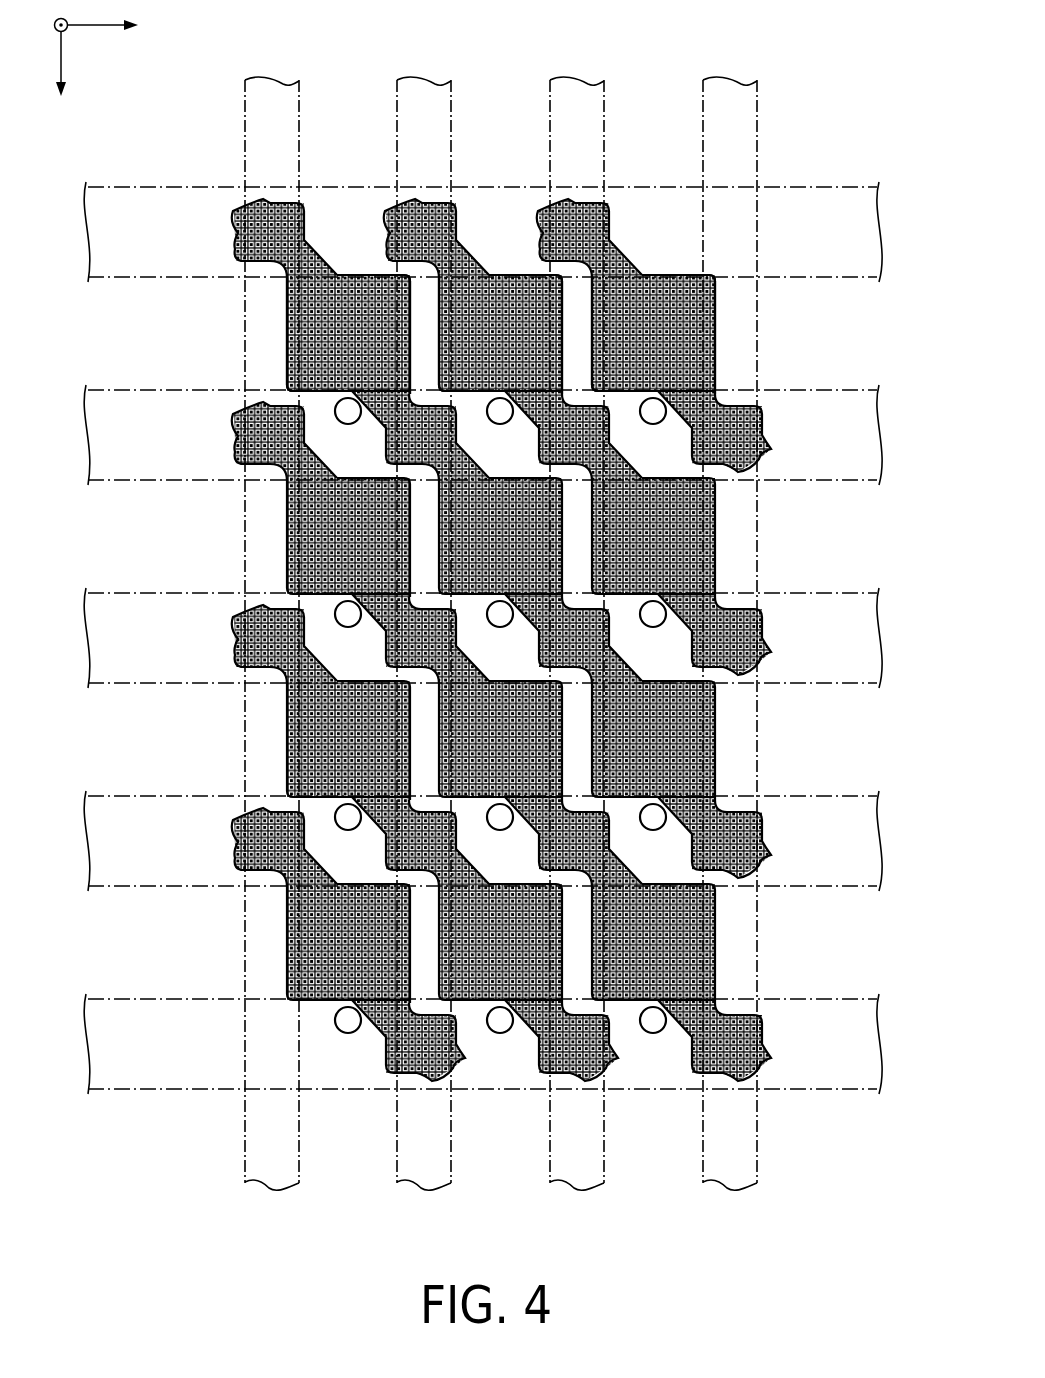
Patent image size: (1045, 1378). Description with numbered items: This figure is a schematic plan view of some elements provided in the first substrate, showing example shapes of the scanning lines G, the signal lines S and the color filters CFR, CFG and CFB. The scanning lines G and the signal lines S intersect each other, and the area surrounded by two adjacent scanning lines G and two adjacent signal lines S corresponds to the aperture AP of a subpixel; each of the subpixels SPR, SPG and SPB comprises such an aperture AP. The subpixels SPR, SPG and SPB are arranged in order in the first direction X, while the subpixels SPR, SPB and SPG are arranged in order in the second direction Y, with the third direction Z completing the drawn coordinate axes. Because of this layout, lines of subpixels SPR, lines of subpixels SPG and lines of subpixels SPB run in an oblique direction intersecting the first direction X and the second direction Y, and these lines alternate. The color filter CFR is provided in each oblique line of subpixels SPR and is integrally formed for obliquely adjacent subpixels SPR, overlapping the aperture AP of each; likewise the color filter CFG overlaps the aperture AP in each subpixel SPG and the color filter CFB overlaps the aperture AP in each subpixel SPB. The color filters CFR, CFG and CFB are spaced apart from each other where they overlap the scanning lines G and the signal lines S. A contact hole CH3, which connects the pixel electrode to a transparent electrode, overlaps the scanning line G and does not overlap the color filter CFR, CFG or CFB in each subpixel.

The aperture AP is at (501, 263).
The color filter CFR is at (354, 882).
The color filter CFG is at (506, 882).
The color filter CFB is at (658, 882).
The subpixel SPR is at (373, 947).
The subpixel SPG is at (525, 947).
The subpixel SPB is at (678, 947).
The contact hole CH3 is at (653, 1007).
The scanning line G is at (507, 638).
The signal line S is at (501, 666).
The first direction X is at (112, 25).
The second direction Y is at (61, 80).
The third direction Z is at (53, 16).